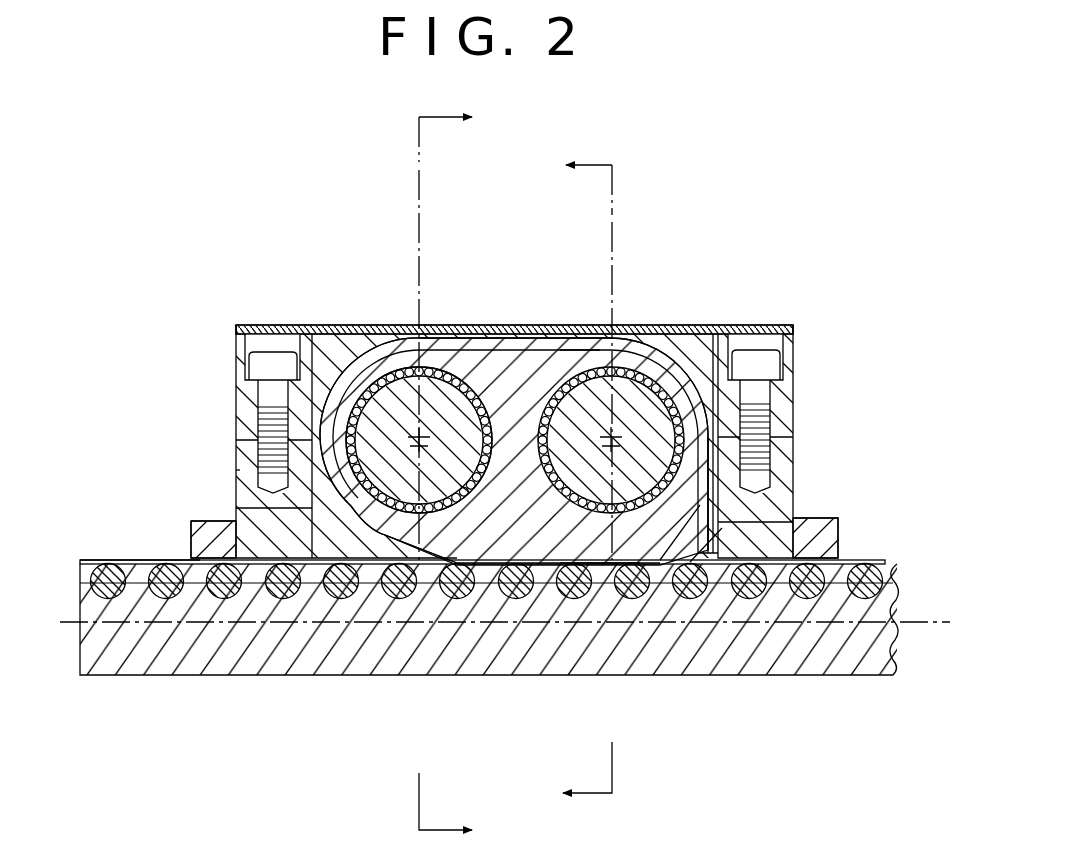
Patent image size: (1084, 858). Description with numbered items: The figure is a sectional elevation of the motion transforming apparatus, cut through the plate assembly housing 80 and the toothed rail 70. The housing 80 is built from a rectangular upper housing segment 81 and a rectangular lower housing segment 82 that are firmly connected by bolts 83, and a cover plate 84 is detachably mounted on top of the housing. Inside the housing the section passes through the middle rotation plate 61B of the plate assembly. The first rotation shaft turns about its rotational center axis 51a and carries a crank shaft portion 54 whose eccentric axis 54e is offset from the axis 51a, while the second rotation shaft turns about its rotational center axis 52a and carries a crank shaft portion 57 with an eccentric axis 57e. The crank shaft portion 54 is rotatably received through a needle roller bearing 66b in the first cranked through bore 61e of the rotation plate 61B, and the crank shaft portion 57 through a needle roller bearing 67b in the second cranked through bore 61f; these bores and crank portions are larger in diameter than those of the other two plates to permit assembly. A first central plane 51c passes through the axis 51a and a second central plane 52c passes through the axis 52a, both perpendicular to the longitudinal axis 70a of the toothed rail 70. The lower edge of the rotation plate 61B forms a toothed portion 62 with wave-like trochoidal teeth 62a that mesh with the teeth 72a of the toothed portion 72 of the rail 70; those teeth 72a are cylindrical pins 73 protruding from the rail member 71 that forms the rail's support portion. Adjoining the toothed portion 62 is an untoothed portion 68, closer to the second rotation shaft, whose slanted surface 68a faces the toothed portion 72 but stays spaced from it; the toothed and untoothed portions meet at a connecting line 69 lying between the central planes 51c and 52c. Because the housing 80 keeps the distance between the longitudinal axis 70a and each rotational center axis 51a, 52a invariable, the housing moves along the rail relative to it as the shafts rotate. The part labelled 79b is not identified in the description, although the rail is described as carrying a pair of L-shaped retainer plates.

The rotational center axis 51a is at (615, 402).
The first central plane 51c is at (614, 283).
The rotational center axis 52a is at (414, 420).
The second central plane 52c is at (421, 283).
The crank shaft portion 54 is at (596, 398).
The eccentric axis 54e is at (600, 568).
The crank shaft portion 57 is at (378, 382).
The eccentric axis 57e is at (470, 493).
The rotation plate 61B is at (540, 350).
The first cranked through bore 61e is at (653, 397).
The second cranked through bore 61f is at (467, 390).
The toothed portion 62 is at (663, 562).
The teeth 62a is at (472, 566).
The needle roller bearing 66b is at (573, 347).
The needle roller bearing 67b is at (307, 509).
The untoothed portion 68 is at (388, 563).
The slanted surface 68a is at (389, 542).
The connecting line 69 is at (463, 557).
The toothed rail 70 is at (908, 641).
The longitudinal axis 70a is at (920, 622).
The rail member 71 is at (167, 665).
The toothed portion 72 is at (860, 562).
The teeth 72a is at (455, 575).
The cylindrical pins 73 is at (127, 563).
The plate end 79b is at (145, 560).
The plate assembly housing 80 is at (803, 348).
The upper housing segment 81 is at (235, 393).
The lower housing segment 82 is at (236, 463).
The bolts 83 is at (248, 340).
The cover plate 84 is at (492, 323).